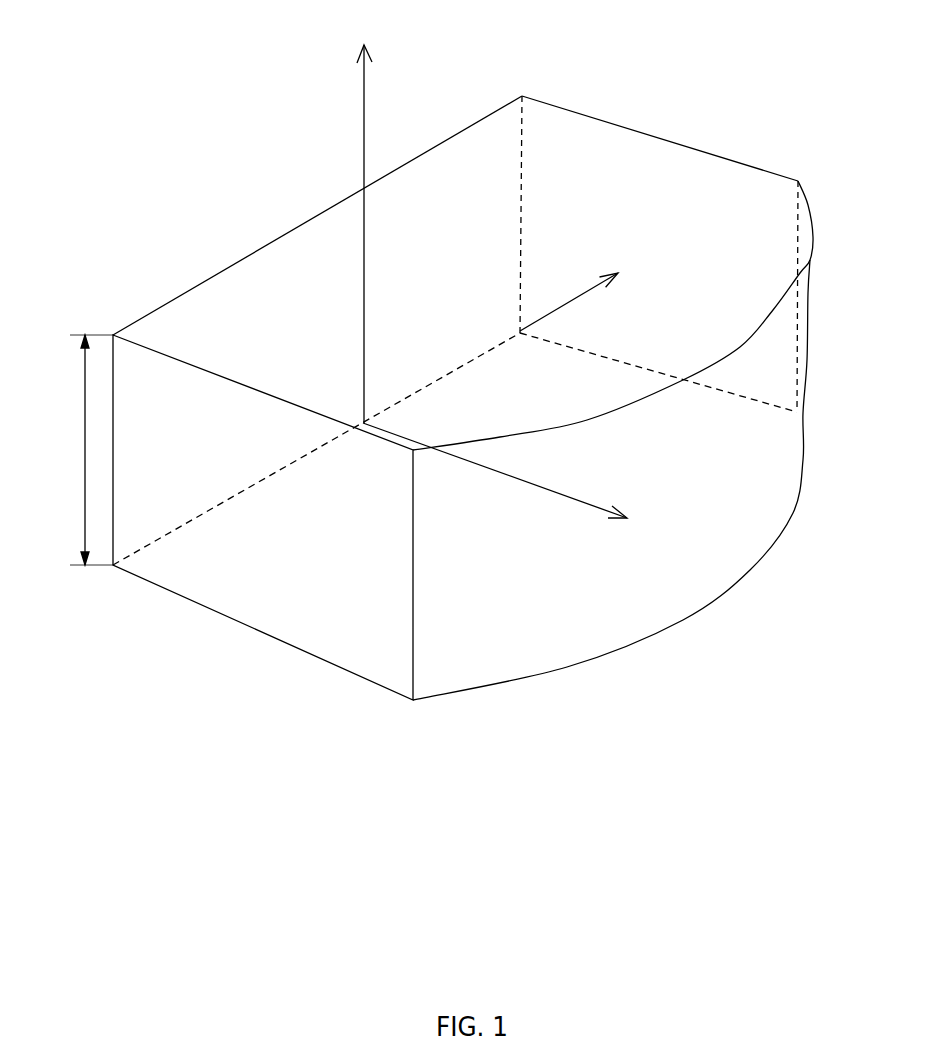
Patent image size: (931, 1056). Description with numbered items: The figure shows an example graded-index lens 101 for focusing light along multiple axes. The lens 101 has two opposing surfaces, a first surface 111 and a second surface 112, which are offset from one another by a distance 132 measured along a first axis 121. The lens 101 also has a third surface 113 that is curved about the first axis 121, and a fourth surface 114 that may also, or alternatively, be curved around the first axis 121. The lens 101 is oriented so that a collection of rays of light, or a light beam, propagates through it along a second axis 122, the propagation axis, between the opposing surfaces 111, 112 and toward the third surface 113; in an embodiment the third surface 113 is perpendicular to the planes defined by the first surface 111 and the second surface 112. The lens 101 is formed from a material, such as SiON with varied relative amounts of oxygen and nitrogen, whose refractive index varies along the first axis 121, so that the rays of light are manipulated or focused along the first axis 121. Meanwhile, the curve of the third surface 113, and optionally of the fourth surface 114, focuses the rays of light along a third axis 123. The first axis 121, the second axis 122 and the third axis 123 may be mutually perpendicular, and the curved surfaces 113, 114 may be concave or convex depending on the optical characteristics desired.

The graded-index lens 101 is at (517, 93).
The first surface 111 is at (252, 285).
The second surface 112 is at (247, 512).
The third surface 113 is at (806, 370).
The fourth surface 114 is at (417, 180).
The first axis 121 is at (362, 97).
The second axis 122 is at (600, 510).
The third axis 123 is at (582, 298).
The distance 132 is at (85, 453).